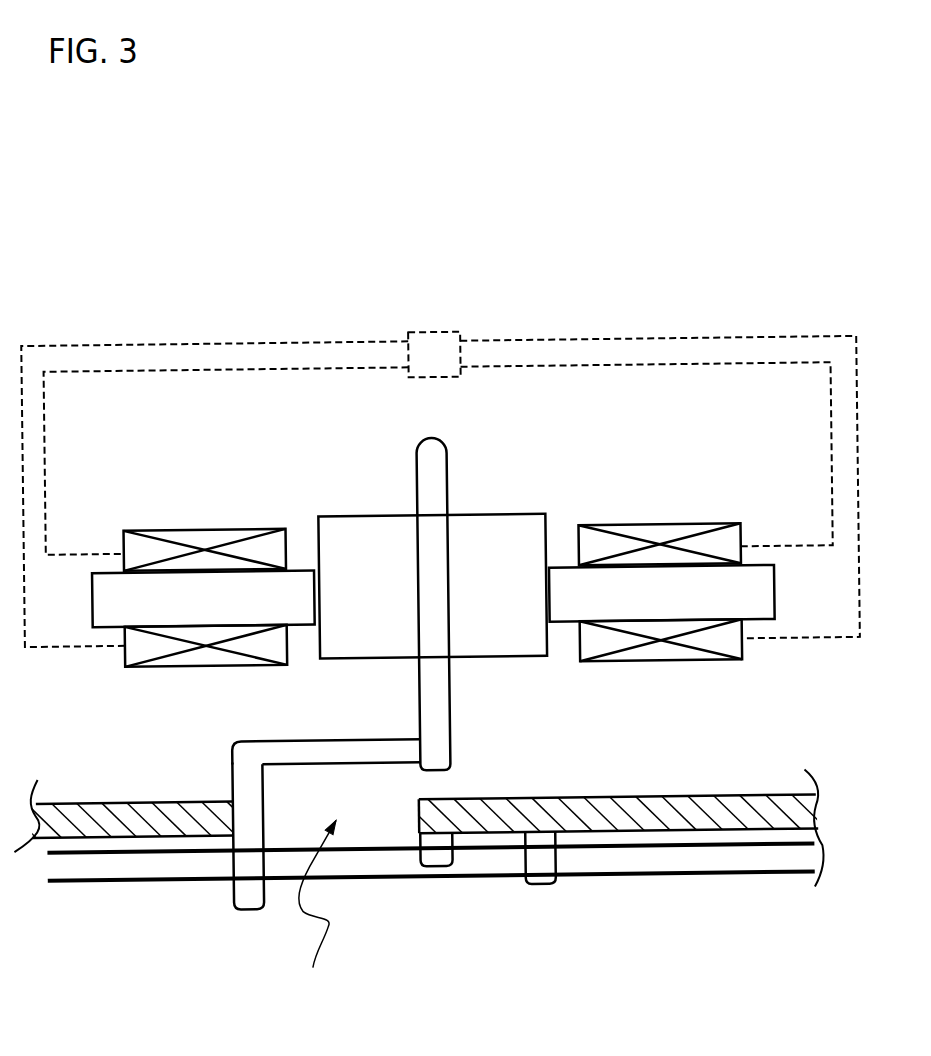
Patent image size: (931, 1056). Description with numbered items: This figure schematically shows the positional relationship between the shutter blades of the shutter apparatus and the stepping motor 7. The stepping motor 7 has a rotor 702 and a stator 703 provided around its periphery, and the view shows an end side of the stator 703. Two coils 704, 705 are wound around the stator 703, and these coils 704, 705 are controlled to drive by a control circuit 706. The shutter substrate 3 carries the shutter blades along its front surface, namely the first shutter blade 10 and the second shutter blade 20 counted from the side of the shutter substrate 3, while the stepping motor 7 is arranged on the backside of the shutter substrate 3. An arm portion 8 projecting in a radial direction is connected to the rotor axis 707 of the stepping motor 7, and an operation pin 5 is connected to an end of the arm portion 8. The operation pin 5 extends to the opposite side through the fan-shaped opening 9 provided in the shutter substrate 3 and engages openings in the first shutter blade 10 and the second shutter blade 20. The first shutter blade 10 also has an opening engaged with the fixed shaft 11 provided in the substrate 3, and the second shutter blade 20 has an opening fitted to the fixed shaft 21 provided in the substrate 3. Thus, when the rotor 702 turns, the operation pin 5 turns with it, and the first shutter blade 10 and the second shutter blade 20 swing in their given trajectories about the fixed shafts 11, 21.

The shutter substrate 3 is at (698, 798).
The operation pin 5 is at (245, 895).
The stepping motor 7 is at (653, 480).
The arm portion 8 is at (298, 748).
The opening 9 is at (318, 911).
The first shutter blade 10 is at (360, 852).
The fixed shaft 11 is at (435, 872).
The second shutter blade 20 is at (615, 877).
The fixed shaft 21 is at (534, 881).
The rotor 702 is at (491, 533).
The stator 703 is at (112, 599).
The coil 704 is at (182, 527).
The coil 705 is at (716, 533).
The control circuit 706 is at (434, 355).
The rotor axis 707 is at (449, 724).